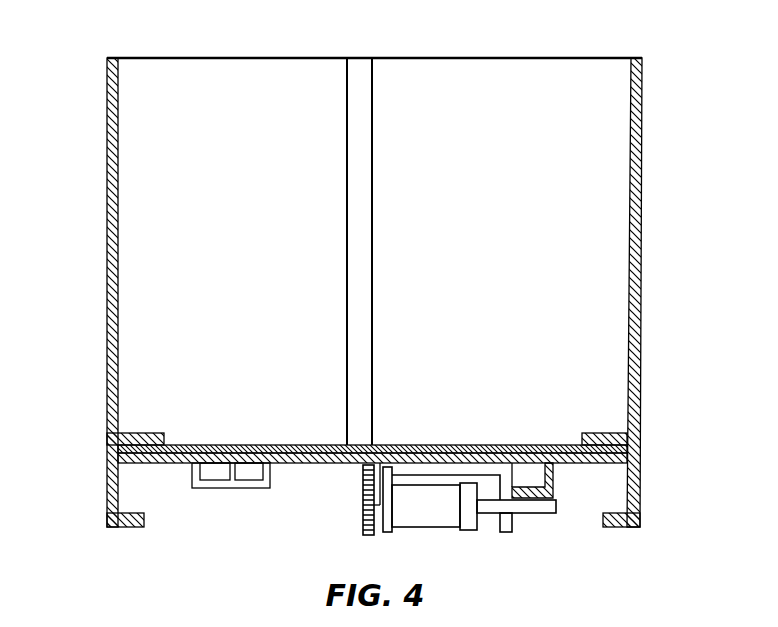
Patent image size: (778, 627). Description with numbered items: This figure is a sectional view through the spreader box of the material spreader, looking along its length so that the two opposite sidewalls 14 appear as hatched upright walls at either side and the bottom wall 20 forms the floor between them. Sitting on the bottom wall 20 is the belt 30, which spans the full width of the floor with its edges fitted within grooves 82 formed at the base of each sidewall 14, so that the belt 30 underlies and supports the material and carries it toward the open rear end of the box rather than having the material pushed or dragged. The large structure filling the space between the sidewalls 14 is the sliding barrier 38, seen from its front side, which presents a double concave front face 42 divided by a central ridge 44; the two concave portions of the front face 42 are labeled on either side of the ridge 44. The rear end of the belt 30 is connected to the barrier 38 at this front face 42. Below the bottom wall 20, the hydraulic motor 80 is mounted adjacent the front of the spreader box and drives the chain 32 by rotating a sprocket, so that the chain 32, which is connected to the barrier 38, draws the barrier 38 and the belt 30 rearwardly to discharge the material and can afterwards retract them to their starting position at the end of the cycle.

The sidewalls 14 is at (107, 226).
The bottom wall 20 is at (292, 463).
The belt 30 is at (317, 445).
The chain 32 is at (362, 515).
The sliding barrier 38 is at (258, 85).
The double concave front face 42 is at (223, 167).
The ridge 44 is at (373, 263).
The hydraulic motor 80 is at (425, 527).
The grooves 82 is at (164, 437).